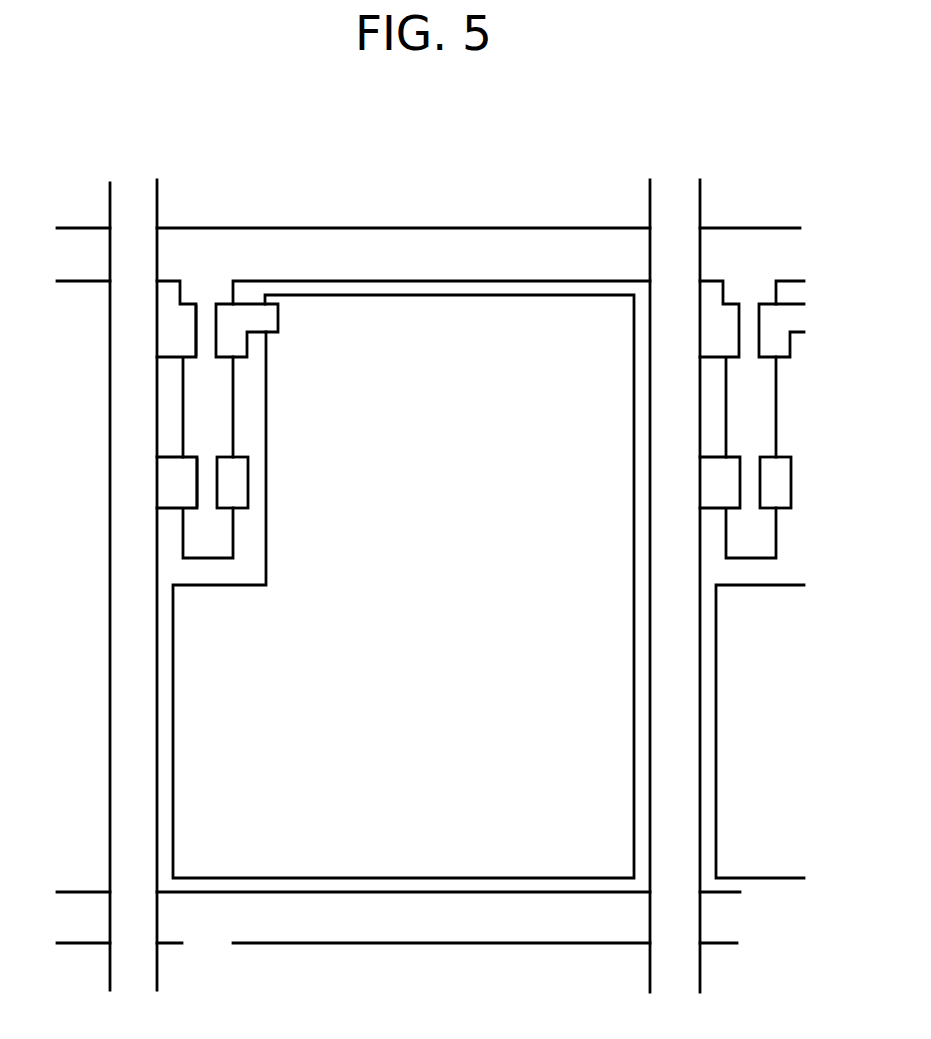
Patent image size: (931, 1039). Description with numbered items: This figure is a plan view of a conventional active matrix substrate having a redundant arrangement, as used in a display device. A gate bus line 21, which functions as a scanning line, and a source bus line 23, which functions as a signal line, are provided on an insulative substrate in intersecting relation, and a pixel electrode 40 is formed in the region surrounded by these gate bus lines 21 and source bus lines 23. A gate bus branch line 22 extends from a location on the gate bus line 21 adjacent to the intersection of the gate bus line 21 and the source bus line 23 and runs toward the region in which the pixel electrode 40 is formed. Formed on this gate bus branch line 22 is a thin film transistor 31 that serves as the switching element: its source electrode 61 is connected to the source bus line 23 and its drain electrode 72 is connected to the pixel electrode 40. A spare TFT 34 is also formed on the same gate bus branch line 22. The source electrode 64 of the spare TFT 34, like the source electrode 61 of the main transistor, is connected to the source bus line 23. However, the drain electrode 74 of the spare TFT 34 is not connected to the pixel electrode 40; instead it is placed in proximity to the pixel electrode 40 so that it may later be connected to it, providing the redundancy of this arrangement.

The gate bus line 21 is at (300, 240).
The gate bus branch line 22 is at (214, 293).
The source bus line 23 is at (118, 201).
The thin film transistor 31 is at (206, 332).
The spare TFT 34 is at (208, 487).
The pixel electrode 40 is at (452, 639).
The source electrode 61 is at (175, 321).
The source electrode 64 is at (180, 463).
The drain electrode 72 is at (272, 322).
The drain electrode 74 is at (240, 486).